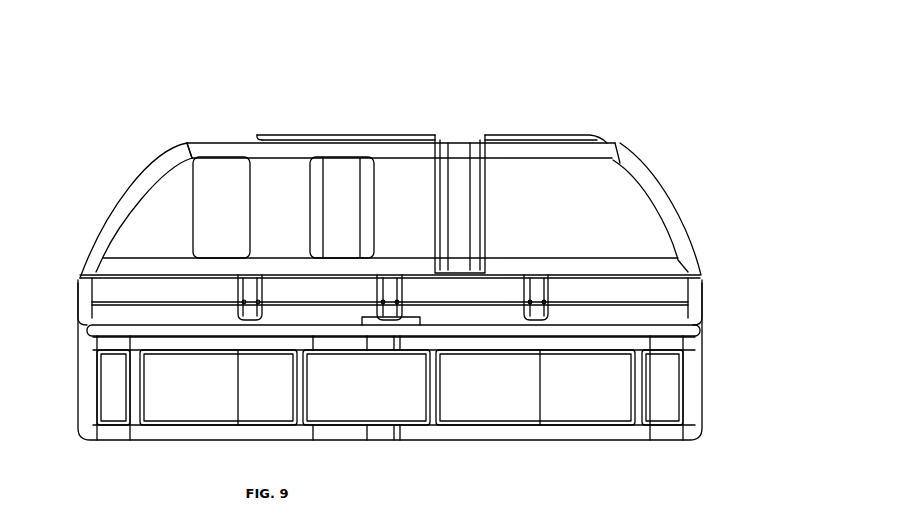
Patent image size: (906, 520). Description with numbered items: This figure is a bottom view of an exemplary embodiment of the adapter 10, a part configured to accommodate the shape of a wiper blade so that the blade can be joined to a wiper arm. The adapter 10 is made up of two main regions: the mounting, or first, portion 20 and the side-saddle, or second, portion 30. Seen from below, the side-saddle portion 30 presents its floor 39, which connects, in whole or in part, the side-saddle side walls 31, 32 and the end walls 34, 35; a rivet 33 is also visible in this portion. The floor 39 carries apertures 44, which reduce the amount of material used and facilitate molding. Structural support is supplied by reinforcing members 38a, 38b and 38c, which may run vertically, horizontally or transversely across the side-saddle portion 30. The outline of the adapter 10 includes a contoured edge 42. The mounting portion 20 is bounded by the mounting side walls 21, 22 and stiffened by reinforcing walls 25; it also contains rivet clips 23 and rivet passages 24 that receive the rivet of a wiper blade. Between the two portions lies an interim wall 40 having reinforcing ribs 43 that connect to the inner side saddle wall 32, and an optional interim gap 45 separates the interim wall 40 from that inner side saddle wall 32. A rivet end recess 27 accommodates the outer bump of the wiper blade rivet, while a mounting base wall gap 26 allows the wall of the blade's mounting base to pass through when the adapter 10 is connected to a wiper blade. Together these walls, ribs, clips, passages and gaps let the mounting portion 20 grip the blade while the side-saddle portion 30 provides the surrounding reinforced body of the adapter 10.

The adapter 10 is at (132, 137).
The mounting portion 20 is at (718, 388).
The mounting side wall 21 is at (157, 430).
The mounting side wall 22 is at (173, 345).
The rivet clips 23 is at (382, 347).
The rivet passages 24 is at (357, 347).
The reinforcing walls 25 is at (297, 383).
The mounting base wall gap 26 is at (630, 332).
The rivet end recess 27 is at (397, 322).
The side-saddle portion 30 is at (720, 202).
The side-saddle side wall 31 is at (220, 150).
The inner side saddle wall 32 is at (120, 270).
The rivet 33 is at (340, 180).
The end wall 34 is at (128, 202).
The end wall 35 is at (660, 205).
The reinforcing member 38a is at (455, 137).
The reinforcing member 38b is at (293, 137).
The reinforcing member 38c is at (463, 192).
The floor 39 is at (538, 203).
The interim wall 40 is at (123, 313).
The contoured edge 42 is at (85, 297).
The reinforcing ribs 43 is at (244, 302).
The apertures 44 is at (237, 170).
The interim gap 45 is at (328, 292).